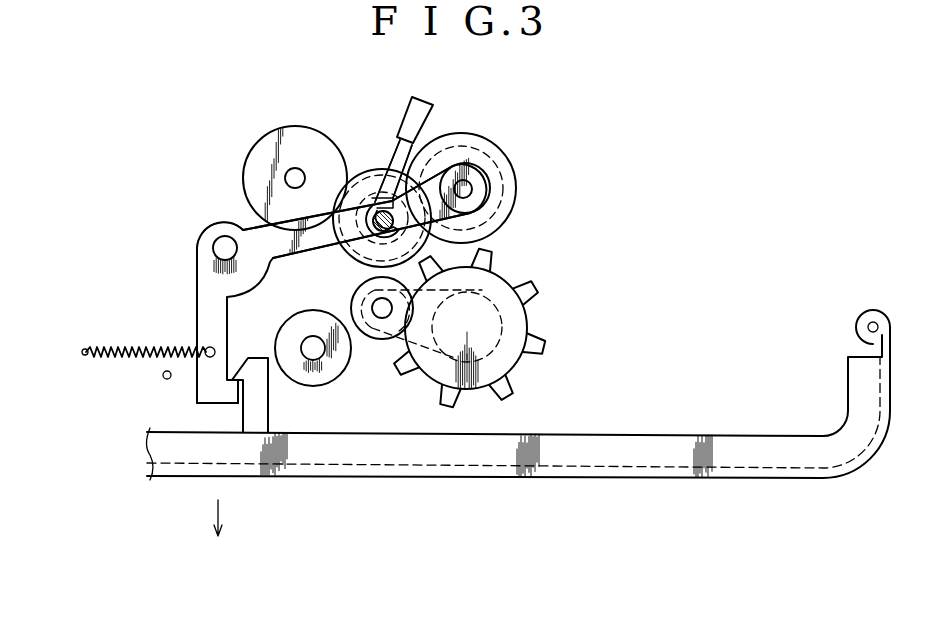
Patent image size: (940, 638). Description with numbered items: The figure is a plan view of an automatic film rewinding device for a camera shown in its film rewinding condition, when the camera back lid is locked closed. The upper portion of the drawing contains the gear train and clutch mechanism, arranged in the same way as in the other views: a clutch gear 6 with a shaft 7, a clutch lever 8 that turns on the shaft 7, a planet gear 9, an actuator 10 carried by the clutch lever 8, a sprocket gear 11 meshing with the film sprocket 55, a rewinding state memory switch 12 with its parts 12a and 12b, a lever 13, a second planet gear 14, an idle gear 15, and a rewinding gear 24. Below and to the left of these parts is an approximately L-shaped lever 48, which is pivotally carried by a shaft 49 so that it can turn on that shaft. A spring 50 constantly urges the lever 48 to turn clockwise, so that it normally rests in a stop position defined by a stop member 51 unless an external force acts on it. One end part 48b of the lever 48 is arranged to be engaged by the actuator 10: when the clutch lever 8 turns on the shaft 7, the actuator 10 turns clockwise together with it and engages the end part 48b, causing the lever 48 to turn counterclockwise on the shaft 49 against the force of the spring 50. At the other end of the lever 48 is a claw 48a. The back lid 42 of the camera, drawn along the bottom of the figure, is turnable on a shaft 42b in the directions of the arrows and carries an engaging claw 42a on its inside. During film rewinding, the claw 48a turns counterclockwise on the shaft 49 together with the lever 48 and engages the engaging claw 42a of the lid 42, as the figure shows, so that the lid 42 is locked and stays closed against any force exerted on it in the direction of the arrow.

The clutch gear 6 is at (505, 165).
The shaft 7 is at (472, 190).
The clutch lever 8 is at (482, 176).
The planet gear 9 is at (353, 178).
The actuator 10 is at (350, 258).
The sprocket gear 11 is at (509, 282).
The rewinding state memory switch 12 is at (421, 110).
The rod shank 12a is at (426, 146).
The rod hook end 12b is at (387, 172).
The lever 13 is at (432, 350).
The planet gear 14 is at (382, 340).
The idle gear 15 is at (312, 378).
The rewinding gear 24 is at (300, 130).
The back lid 42 is at (552, 478).
The engaging claw 42a is at (258, 358).
The shaft 42b is at (868, 322).
The L-shaped lever 48 is at (197, 285).
The claw 48a is at (218, 396).
The end part 48b is at (362, 182).
The shaft 49 is at (213, 244).
The spring 50 is at (148, 349).
The stop member 51 is at (164, 378).
The sprocket 55 is at (518, 278).